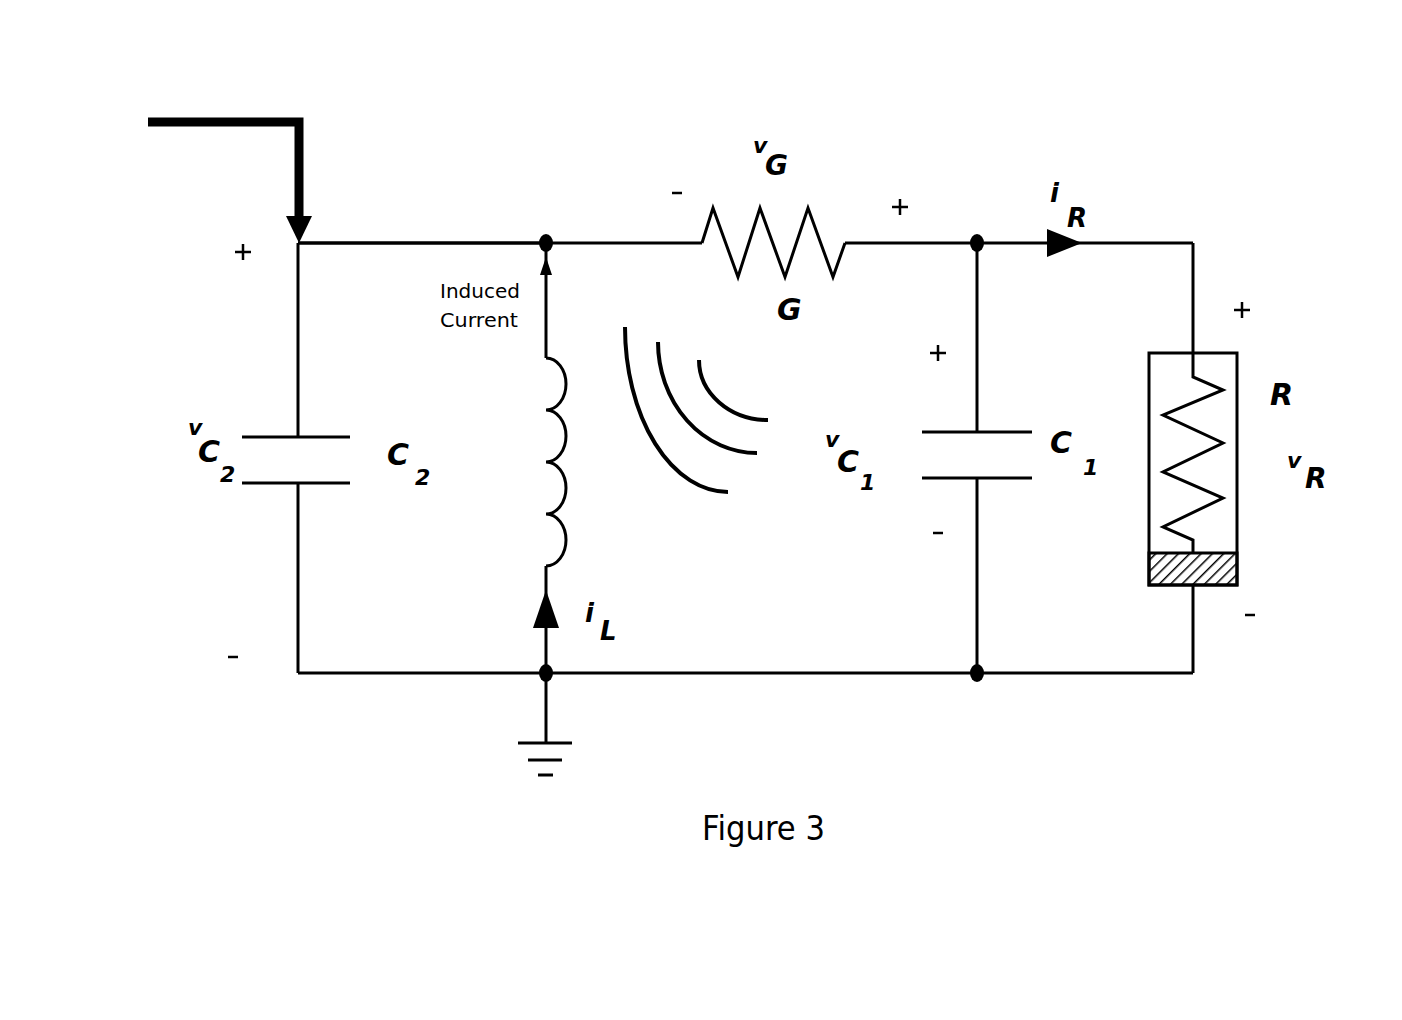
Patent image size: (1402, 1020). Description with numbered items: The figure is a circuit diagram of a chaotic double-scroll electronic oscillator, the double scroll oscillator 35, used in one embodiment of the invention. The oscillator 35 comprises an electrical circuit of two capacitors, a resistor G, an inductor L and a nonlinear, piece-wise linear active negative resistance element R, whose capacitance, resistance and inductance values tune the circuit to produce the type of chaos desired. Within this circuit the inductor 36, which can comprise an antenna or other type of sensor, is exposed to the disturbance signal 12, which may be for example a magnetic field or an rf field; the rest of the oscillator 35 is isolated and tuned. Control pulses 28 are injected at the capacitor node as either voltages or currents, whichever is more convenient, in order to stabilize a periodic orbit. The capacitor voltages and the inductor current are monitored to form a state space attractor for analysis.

The control pulses 28 is at (285, 175).
The double scroll oscillator 35 is at (474, 182).
The inductor 36 is at (545, 400).
The disturbance signal 12 is at (730, 382).